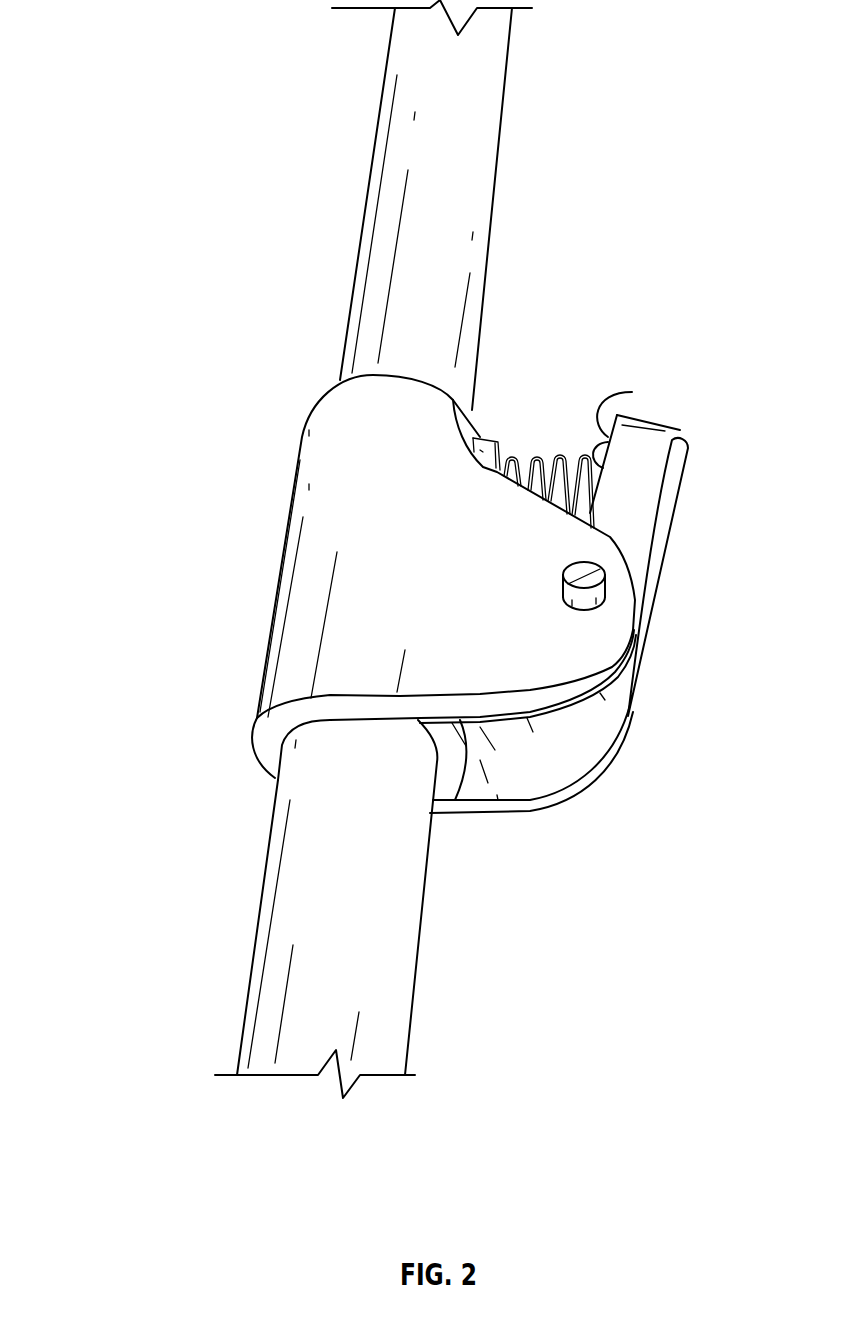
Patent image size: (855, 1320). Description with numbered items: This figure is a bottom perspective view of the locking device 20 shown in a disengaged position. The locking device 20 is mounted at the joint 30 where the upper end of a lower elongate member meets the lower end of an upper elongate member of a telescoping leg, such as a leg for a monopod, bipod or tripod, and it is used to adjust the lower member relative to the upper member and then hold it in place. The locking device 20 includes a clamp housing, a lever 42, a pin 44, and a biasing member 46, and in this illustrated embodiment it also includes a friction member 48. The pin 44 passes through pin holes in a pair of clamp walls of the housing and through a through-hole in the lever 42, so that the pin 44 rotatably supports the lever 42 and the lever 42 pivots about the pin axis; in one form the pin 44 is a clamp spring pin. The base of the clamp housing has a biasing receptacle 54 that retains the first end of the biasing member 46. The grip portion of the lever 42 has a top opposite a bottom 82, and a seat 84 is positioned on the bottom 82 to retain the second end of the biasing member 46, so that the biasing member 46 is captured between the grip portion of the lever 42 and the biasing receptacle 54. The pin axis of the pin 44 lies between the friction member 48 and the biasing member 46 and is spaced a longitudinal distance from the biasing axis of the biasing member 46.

The locking device 20 is at (147, 646).
The joint 30 is at (282, 557).
The lever 42 is at (655, 537).
The pin 44 is at (603, 582).
The biasing member 46 is at (556, 462).
The friction member 48 is at (450, 777).
The biasing receptacle 54 is at (487, 442).
The bottom 82 is at (632, 392).
The seat 84 is at (608, 442).